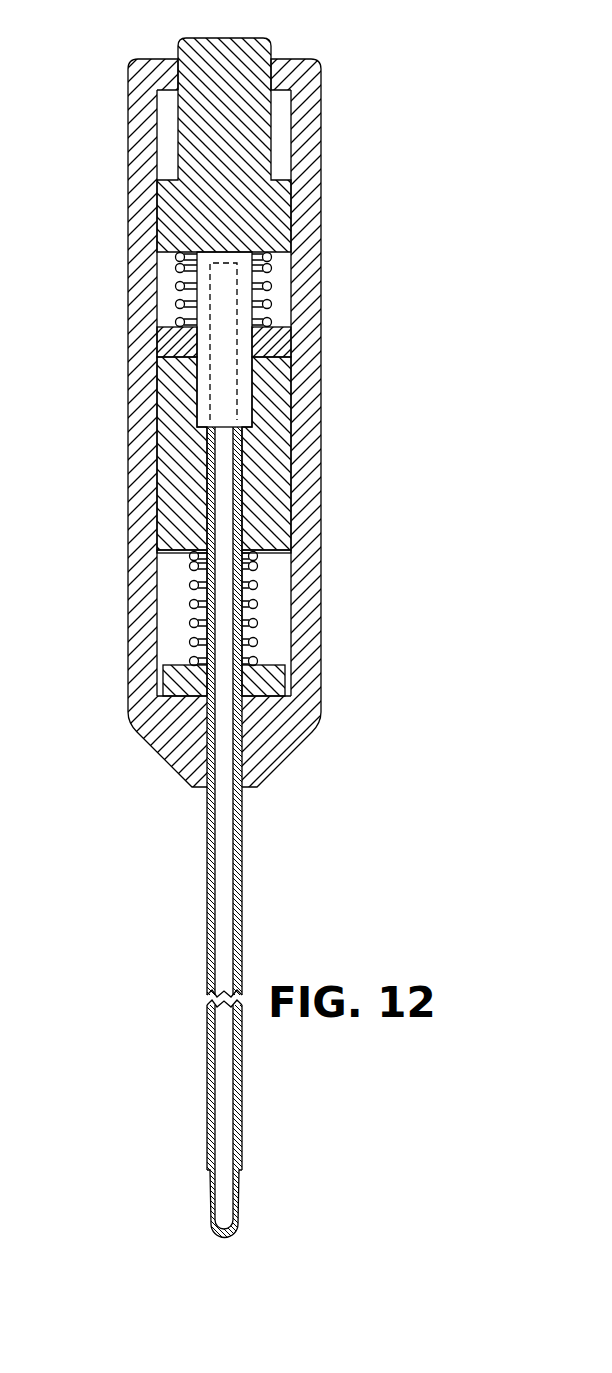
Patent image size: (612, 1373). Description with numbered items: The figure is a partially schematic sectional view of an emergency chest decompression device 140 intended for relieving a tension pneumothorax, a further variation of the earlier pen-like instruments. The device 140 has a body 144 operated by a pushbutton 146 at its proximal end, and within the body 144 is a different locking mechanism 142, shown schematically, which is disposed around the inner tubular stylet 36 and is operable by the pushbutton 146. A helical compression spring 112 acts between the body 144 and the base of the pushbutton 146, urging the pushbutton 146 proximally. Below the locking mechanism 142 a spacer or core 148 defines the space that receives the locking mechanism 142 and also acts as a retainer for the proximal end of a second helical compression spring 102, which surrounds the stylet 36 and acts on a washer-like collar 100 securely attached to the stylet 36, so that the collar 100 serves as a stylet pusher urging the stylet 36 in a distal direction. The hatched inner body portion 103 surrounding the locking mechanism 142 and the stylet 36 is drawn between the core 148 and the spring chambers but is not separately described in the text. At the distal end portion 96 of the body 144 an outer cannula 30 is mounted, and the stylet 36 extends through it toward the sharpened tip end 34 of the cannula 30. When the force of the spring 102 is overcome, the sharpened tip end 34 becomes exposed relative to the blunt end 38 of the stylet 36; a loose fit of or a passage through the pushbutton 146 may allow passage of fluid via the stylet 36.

The emergency chest decompression device 140 is at (82, 248).
The pushbutton 146 is at (244, 38).
The body 144 is at (322, 434).
The helical compression spring 112 is at (272, 293).
The locking mechanism 142 is at (243, 396).
The inner body 103 is at (243, 496).
The spacer or core 148 is at (172, 561).
The helical compression spring 102 is at (253, 573).
The inner tubular stylet 36 is at (255, 624).
The collar 100 is at (165, 668).
The distal end portion 96 is at (290, 755).
The cannula 30 is at (205, 932).
The sharpened tip end 34 is at (243, 1174).
The blunt end 38 is at (232, 1239).